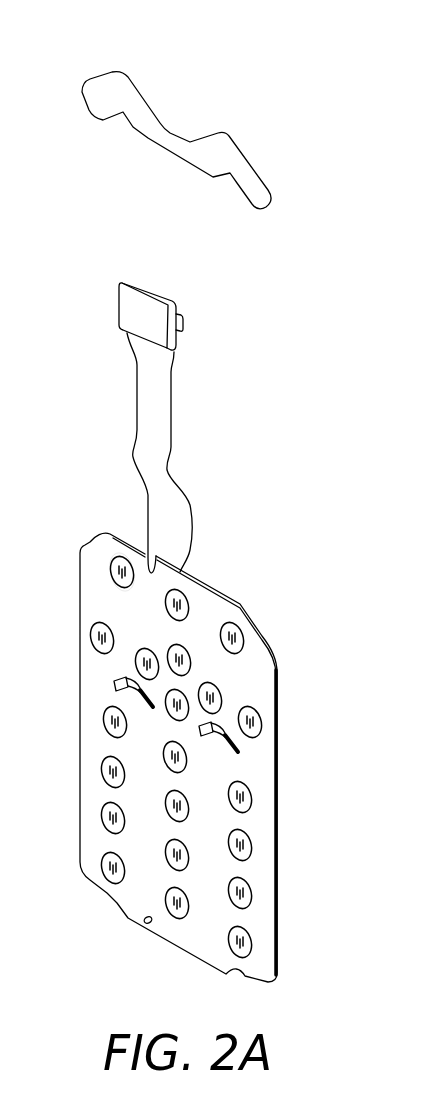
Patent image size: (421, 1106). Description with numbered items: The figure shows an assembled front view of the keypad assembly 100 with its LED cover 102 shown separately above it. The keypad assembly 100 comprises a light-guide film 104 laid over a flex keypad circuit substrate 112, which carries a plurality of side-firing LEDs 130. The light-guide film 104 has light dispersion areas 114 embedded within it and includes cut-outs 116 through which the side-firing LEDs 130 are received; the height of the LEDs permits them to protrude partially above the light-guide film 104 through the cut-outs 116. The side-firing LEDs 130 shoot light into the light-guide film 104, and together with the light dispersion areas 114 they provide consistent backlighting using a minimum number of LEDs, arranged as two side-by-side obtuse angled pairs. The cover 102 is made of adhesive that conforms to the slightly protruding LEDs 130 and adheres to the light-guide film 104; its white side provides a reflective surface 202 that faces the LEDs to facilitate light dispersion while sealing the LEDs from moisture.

The keypad assembly 100 is at (80, 765).
The cover 102 is at (83, 83).
The light-guide film 104 is at (264, 653).
The flex keypad circuit substrate 112 is at (248, 603).
The light dispersion areas 114 is at (118, 555).
The cut-outs 116 is at (122, 678).
The side-firing LEDs 130 is at (113, 683).
The reflective surface 202 is at (233, 147).